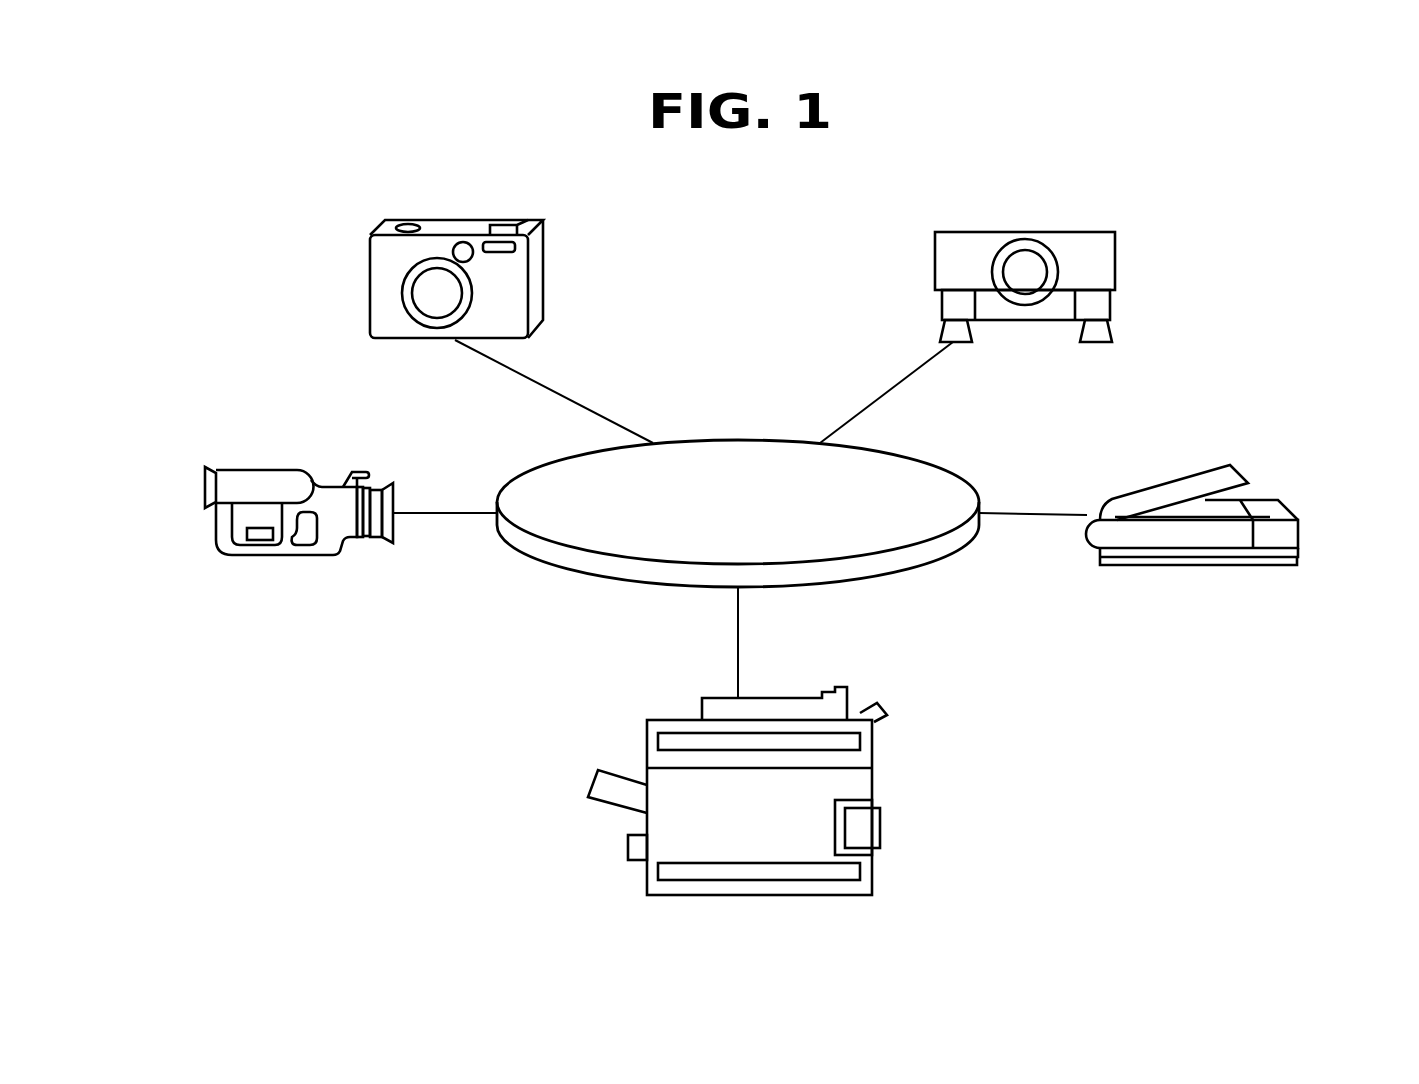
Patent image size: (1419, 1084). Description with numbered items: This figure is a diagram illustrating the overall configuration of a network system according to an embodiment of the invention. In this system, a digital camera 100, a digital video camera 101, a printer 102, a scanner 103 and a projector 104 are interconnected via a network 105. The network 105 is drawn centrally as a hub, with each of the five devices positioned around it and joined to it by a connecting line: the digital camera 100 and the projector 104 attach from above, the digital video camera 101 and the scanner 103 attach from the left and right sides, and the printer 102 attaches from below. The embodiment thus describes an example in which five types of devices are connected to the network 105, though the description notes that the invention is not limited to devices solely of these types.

The digital camera 100 is at (370, 283).
The digital video camera 101 is at (205, 489).
The printer 102 is at (872, 777).
The scanner 103 is at (1298, 532).
The projector 104 is at (1115, 257).
The network 105 is at (738, 440).